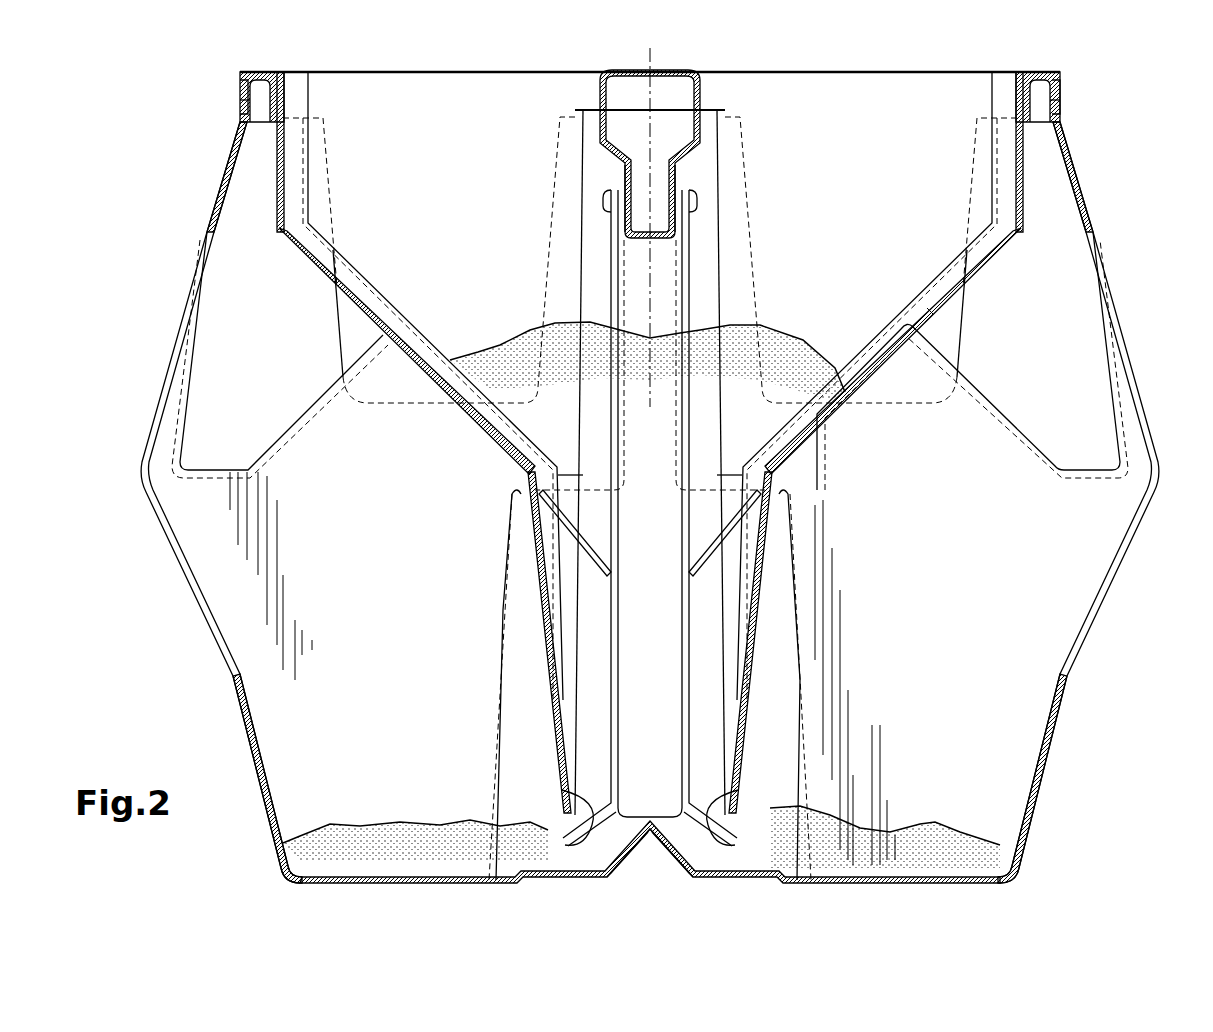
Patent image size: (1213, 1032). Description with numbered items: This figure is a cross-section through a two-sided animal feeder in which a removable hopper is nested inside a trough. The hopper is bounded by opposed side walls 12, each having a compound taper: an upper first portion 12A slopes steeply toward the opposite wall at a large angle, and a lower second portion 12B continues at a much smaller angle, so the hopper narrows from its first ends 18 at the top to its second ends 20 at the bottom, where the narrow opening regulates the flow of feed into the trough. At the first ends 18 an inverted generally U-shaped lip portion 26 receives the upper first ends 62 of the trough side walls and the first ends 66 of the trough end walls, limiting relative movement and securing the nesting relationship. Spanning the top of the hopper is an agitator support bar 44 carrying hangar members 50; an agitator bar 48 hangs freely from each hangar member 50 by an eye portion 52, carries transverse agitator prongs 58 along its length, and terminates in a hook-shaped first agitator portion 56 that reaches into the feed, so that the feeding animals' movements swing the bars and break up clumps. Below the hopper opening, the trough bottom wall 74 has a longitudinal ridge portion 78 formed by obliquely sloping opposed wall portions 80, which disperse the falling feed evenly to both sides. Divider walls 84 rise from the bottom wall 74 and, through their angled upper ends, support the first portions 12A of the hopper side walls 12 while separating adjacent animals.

The side wall 12 is at (277, 186).
The first portion of side wall 12A is at (328, 282).
The second portion of side wall 12B is at (540, 640).
The first ends of side walls 18 is at (283, 72).
The second ends of side walls 20 is at (750, 828).
The lip portion 26 is at (228, 101).
The agitator support bar 44 is at (663, 70).
The agitator bar 48 is at (690, 262).
The hangar member 50 is at (700, 195).
The eye portion 52 is at (605, 190).
The first agitator portion 56 is at (565, 790).
The agitator prongs 58 is at (556, 508).
The first ends of trough side walls 62 is at (1062, 100).
The first ends of trough end walls 66 is at (243, 92).
The trough bottom wall 74 is at (852, 886).
The longitudinal ridge portion 78 is at (650, 848).
The opposed wall portions 80 is at (626, 862).
The divider wall 84 is at (1017, 427).